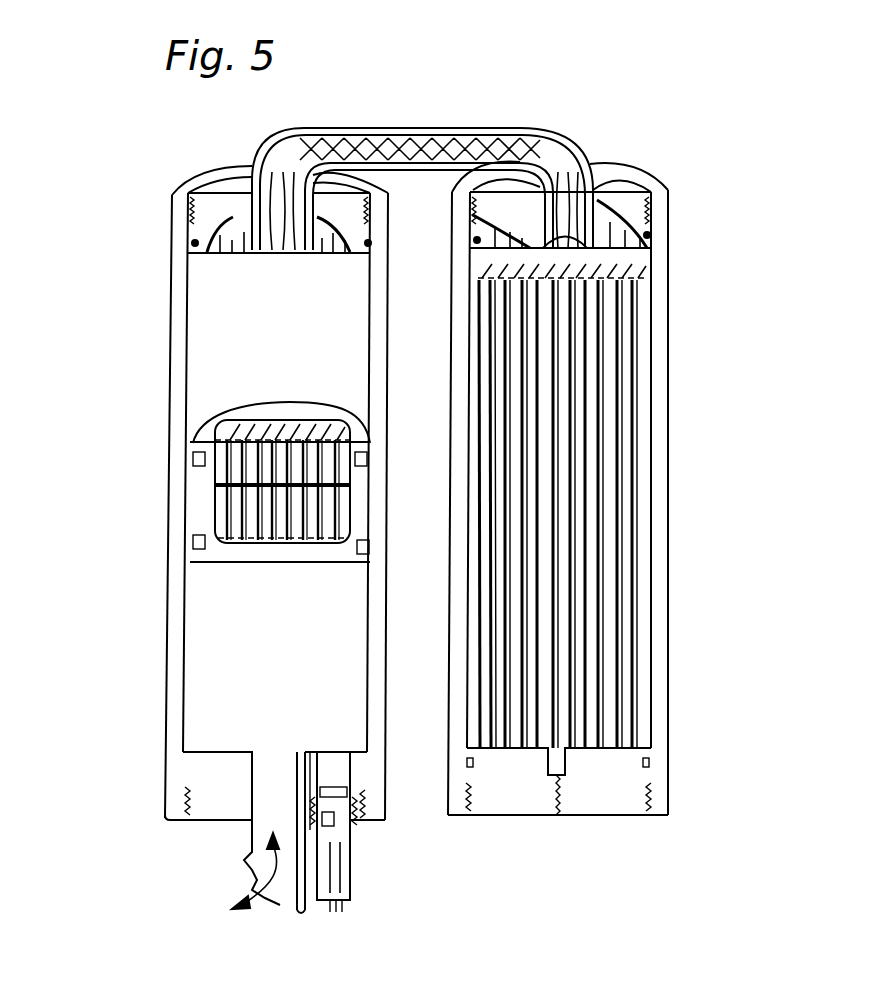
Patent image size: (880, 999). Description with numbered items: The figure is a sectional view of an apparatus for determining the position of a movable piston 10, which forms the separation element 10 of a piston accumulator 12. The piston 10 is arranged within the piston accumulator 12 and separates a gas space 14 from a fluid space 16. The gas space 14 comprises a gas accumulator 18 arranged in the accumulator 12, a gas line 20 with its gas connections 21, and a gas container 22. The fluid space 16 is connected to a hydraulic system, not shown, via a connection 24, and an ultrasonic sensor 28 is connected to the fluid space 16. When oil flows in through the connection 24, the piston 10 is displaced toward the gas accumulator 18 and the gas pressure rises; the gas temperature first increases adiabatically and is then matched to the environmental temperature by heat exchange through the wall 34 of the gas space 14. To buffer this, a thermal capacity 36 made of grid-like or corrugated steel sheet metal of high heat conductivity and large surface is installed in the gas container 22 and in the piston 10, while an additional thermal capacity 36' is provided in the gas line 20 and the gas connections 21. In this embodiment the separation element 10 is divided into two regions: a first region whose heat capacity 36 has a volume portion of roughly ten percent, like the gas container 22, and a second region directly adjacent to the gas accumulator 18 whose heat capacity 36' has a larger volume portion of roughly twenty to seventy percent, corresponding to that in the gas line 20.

The piston 10 is at (201, 509).
The piston accumulator 12 is at (410, 498).
The gas space 14 is at (350, 137).
The fluid space 16 is at (209, 498).
The gas accumulator 18 is at (205, 347).
The gas line 20 is at (444, 92).
The gas connections 21 is at (427, 222).
The gas container 22 is at (627, 497).
The connection 24 is at (278, 864).
The ultrasonic sensor 28 is at (388, 864).
The wall 34 is at (422, 420).
The thermal capacity 36 is at (517, 514).
The additional thermal capacity 36' is at (472, 250).